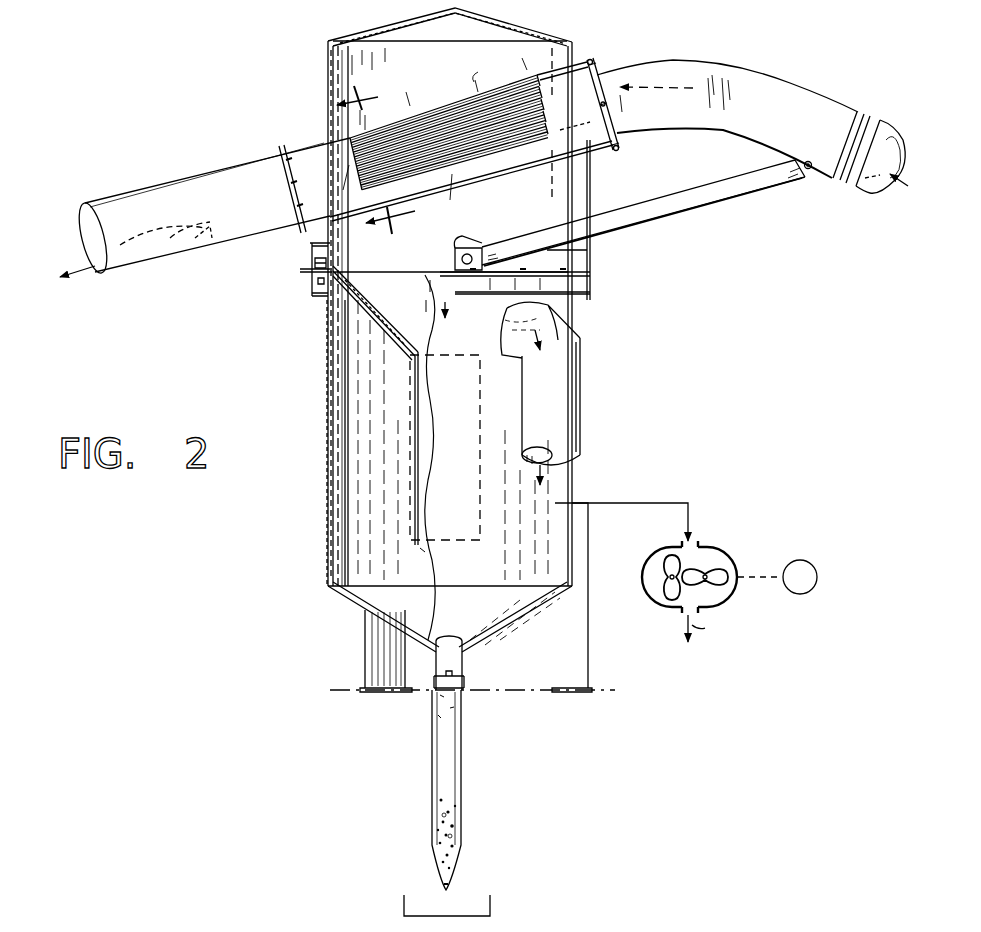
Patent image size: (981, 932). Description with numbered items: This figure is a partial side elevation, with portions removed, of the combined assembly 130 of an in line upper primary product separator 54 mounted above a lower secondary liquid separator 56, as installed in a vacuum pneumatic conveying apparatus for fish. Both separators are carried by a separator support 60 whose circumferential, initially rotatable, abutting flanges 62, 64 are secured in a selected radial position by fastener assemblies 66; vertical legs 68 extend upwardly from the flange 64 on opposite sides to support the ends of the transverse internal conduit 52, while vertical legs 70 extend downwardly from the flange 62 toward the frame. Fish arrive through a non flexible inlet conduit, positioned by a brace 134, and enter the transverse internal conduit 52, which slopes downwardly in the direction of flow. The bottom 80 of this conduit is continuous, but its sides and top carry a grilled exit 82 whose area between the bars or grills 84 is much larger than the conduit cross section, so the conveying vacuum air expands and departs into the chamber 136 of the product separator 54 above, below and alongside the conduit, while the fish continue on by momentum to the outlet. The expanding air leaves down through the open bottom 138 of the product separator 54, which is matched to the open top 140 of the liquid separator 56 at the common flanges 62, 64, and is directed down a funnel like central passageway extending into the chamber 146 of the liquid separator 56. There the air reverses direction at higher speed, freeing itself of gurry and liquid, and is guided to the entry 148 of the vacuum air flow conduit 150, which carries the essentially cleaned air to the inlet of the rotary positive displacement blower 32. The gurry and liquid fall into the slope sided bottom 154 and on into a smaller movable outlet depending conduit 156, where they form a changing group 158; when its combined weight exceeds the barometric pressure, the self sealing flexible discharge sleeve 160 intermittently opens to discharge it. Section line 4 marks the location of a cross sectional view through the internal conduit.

The section line 4- 4 is at (376, 163).
The rotary positive displacement blower 32 is at (712, 547).
The transverse internal conduit 52 is at (456, 186).
The upper primary product separator 54 is at (327, 56).
The lower secondary liquid separator 56 is at (328, 527).
The separator support 60 is at (592, 661).
The flange 62 is at (308, 254).
The flange 64 is at (308, 290).
The fastener assemblies 66 is at (308, 274).
The vertical legs 68 is at (308, 240).
The vertical legs 70 is at (366, 650).
The bottom 80 is at (582, 266).
The grilled exit 82 is at (360, 134).
The bars or grills 84 is at (508, 95).
The combined assembly 130 is at (327, 556).
The brace 134 is at (682, 212).
The chamber 136 is at (330, 62).
The open bottom 138 is at (332, 306).
The open top 140 is at (386, 306).
The chamber 146 is at (346, 494).
The entry 148 is at (514, 324).
The vacuum air flow conduit 150 is at (583, 392).
The slope sided bottom 154 is at (492, 632).
The movable outlet depending conduit 156 is at (440, 741).
The changing group 158 is at (452, 826).
The self sealing flexible discharge sleeve 160 is at (448, 887).